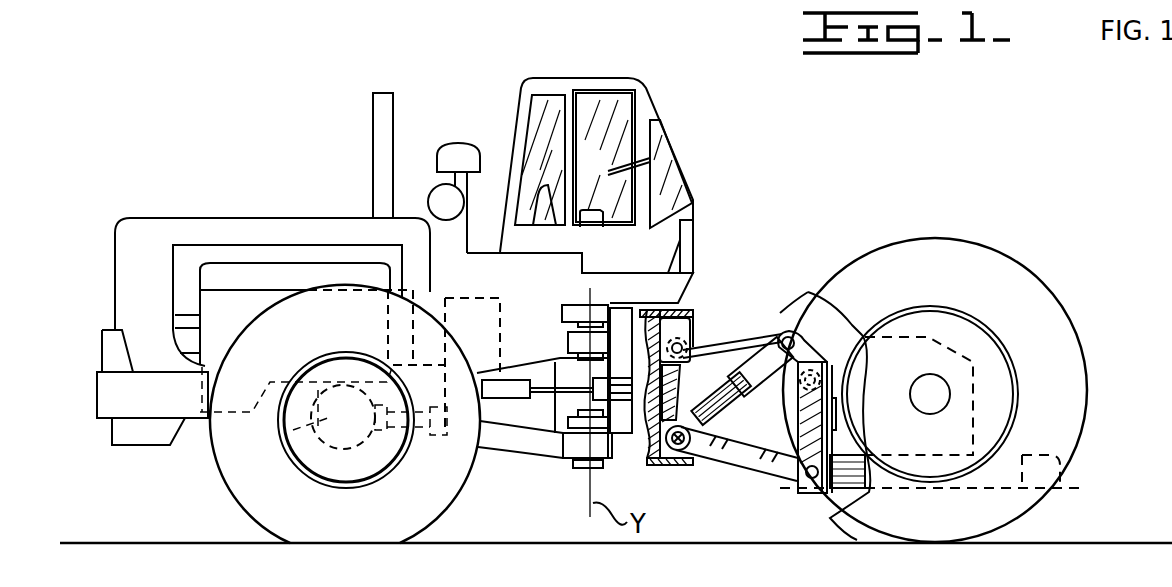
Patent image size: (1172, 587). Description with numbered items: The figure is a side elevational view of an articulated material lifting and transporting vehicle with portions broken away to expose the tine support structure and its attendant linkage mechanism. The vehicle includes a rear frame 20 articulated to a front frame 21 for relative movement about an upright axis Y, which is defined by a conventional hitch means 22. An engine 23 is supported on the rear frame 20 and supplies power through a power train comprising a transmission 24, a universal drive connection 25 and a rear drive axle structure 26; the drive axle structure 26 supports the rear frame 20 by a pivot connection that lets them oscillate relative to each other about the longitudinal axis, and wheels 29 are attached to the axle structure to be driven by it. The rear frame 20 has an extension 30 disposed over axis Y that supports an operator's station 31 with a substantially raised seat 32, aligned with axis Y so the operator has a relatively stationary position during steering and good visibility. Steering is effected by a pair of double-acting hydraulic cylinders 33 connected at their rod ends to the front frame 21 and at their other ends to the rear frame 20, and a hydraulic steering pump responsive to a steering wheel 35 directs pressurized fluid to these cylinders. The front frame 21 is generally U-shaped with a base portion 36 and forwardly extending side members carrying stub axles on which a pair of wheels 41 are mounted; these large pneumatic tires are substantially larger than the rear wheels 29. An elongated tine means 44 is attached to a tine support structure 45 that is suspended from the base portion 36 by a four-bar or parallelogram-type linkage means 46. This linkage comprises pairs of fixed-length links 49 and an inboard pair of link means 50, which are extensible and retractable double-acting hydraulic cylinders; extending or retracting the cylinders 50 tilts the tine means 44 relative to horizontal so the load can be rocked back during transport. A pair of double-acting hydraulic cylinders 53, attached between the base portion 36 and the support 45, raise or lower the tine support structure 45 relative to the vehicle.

The rear frame 20 is at (513, 466).
The front frame 21 is at (828, 322).
The hitch means 22 is at (576, 470).
The engine 23 is at (205, 297).
The transmission 24 is at (488, 313).
The universal drive connection 25 is at (430, 445).
The rear drive axle structure 26 is at (278, 438).
The wheels 29 is at (232, 480).
The chassis frame 30 is at (680, 297).
The operator cab 31 is at (646, 90).
The seat 32 is at (592, 222).
The double-acting hydraulic cylinders 33 is at (502, 383).
The steering wheel 35 is at (628, 168).
The base portion 36 is at (632, 458).
The wheels 41 is at (1052, 296).
The tine means 44 is at (1058, 487).
The tine support structure 45 is at (818, 433).
The linkage means 46 is at (757, 333).
The links 49 is at (757, 458).
The link means 50 is at (787, 372).
The double-acting hydraulic cylinders 53 is at (718, 400).